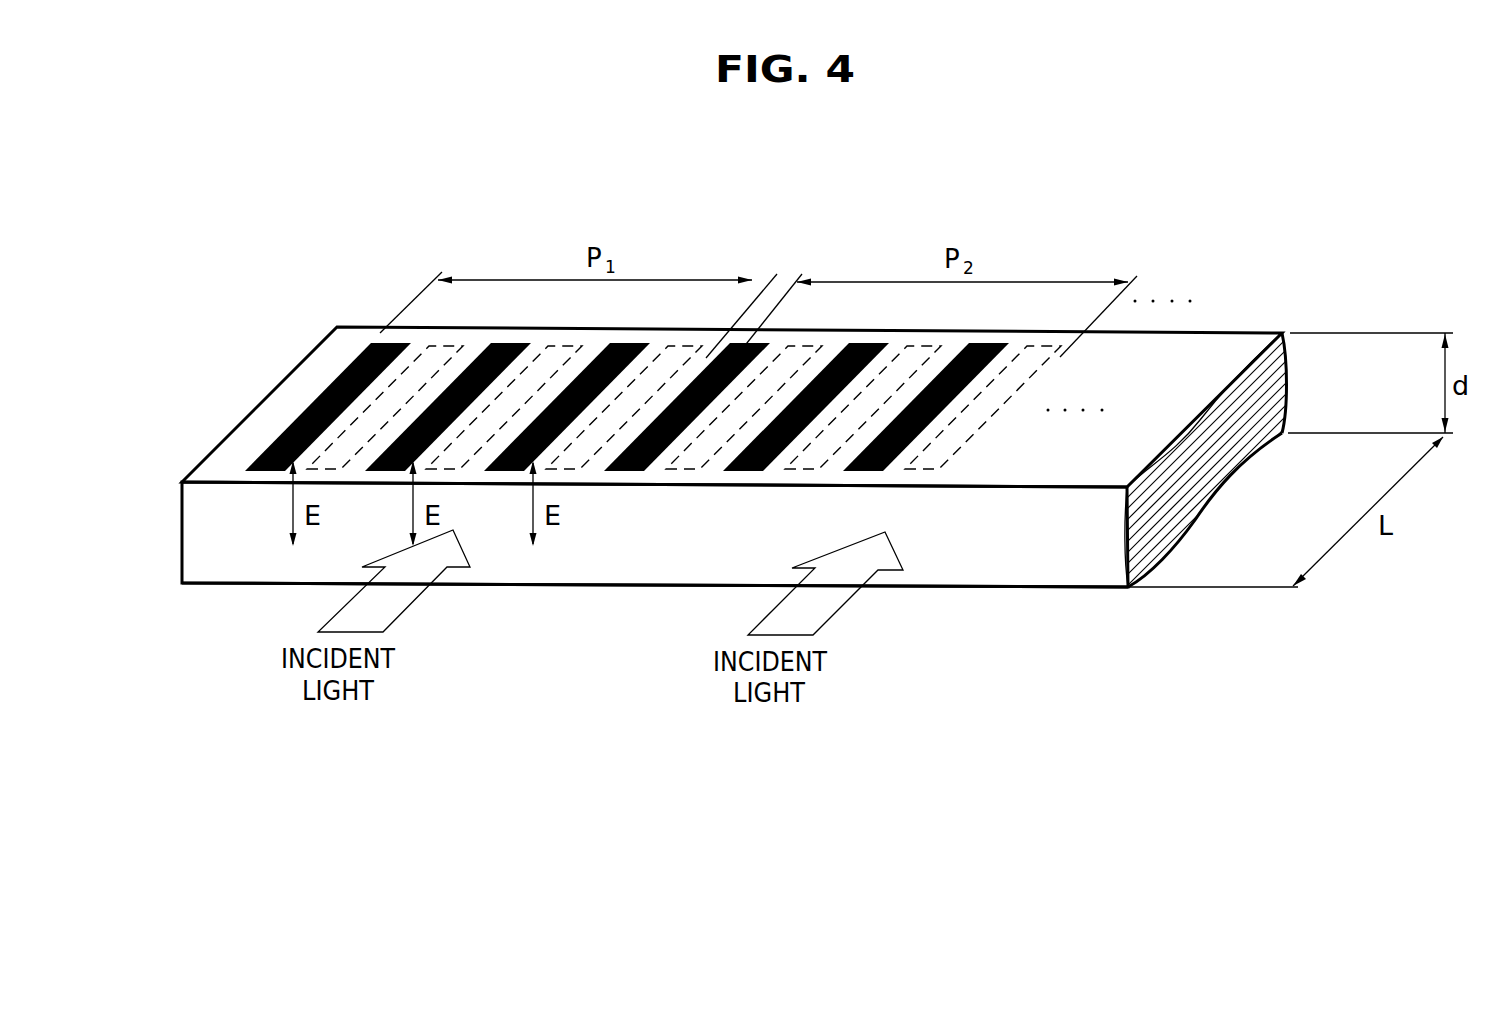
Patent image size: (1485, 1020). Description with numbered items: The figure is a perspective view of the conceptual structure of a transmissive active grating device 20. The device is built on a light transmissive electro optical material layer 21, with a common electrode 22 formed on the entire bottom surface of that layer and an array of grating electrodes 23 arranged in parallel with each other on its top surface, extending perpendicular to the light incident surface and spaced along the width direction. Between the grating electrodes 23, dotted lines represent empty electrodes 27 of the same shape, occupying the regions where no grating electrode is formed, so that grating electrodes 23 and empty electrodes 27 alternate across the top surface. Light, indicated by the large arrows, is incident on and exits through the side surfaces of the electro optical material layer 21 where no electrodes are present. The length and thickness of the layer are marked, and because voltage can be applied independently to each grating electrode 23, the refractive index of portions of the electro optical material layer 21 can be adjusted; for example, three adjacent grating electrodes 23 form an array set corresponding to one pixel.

The transmissive active grating device 20 is at (747, 443).
The electro optical material layer 21 is at (196, 530).
The common electrode 22 is at (258, 567).
The grating electrodes 23 is at (313, 400).
The empty electrodes 27 is at (449, 343).